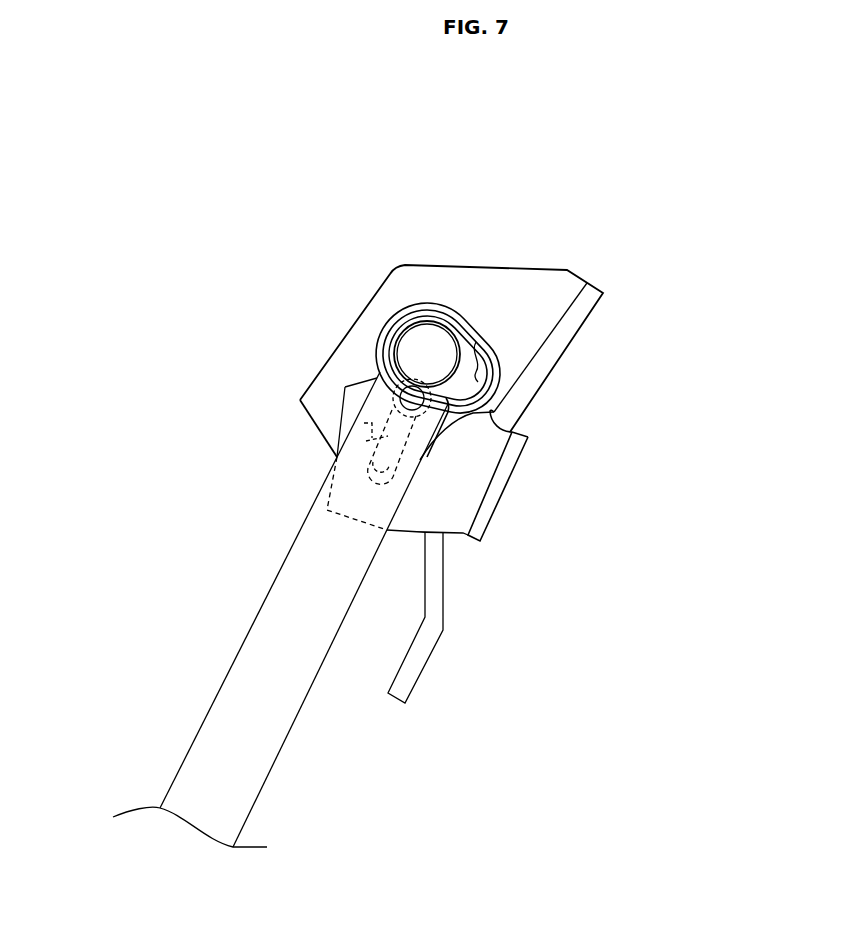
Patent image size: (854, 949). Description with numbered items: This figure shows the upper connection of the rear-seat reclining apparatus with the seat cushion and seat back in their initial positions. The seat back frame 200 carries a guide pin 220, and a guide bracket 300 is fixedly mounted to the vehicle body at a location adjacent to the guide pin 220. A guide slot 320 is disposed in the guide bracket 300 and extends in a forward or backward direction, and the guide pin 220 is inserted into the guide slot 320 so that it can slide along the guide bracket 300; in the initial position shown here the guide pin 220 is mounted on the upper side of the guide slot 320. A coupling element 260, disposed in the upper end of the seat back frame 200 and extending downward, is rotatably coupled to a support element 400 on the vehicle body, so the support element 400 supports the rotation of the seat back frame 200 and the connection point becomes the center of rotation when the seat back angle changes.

The seat back frame 200 is at (297, 632).
The guide pin 220 is at (408, 332).
The coupling element 260 is at (393, 447).
The guide bracket 300 is at (482, 287).
The guide slot 320 is at (480, 360).
The support element 400 is at (455, 522).